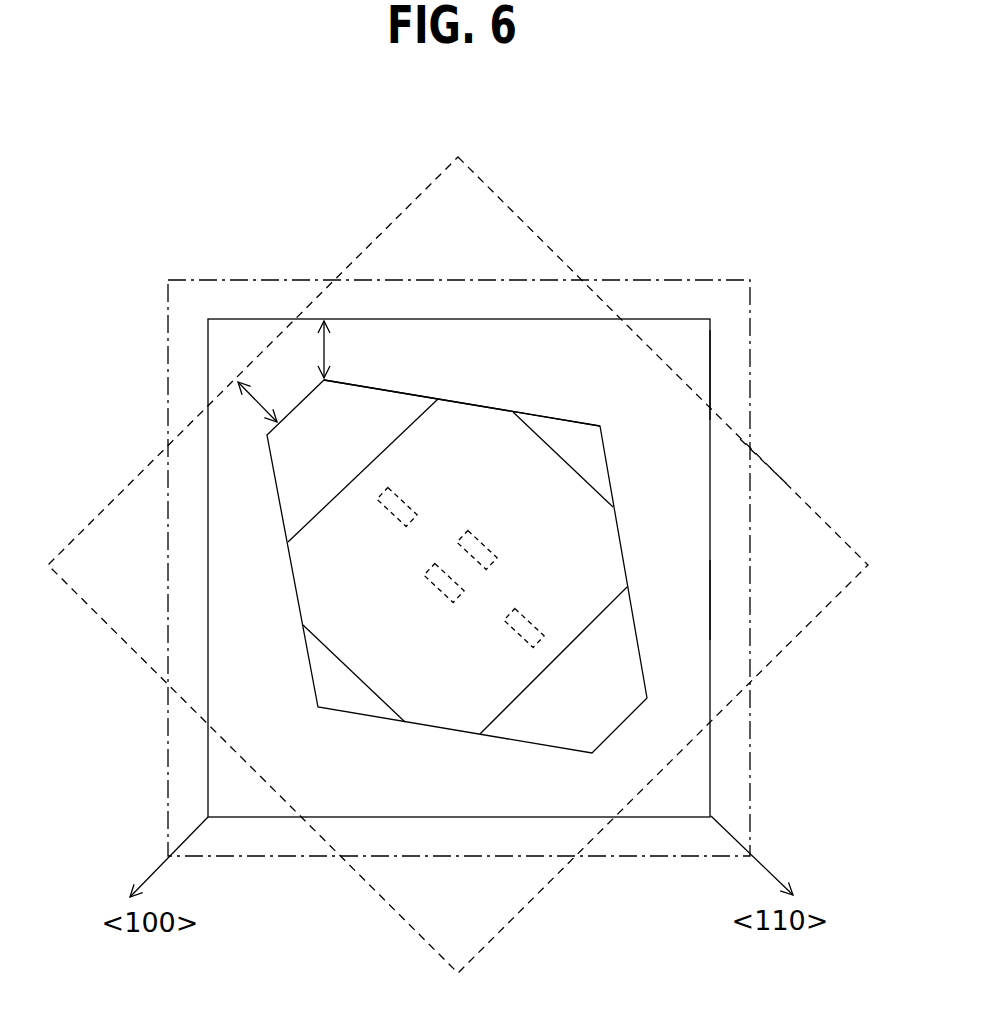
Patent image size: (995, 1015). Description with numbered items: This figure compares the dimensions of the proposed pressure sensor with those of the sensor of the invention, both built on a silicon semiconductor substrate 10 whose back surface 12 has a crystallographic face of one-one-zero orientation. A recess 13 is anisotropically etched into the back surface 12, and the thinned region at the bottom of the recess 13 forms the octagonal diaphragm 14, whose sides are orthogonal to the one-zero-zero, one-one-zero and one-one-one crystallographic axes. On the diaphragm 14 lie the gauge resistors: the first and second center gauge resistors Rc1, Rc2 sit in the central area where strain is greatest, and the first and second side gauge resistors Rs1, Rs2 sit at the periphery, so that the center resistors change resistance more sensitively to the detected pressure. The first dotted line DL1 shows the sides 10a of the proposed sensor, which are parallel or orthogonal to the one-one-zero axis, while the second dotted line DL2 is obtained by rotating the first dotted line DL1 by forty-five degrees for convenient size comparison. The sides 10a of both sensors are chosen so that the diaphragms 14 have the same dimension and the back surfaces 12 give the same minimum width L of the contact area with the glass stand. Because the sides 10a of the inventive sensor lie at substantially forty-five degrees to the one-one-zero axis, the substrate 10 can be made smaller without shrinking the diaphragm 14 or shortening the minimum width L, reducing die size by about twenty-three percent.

The semiconductor substrate 10 is at (796, 493).
The sides 10a is at (762, 458).
The back surface 12 is at (662, 418).
The recess 13 is at (400, 393).
The diaphragm 14 is at (480, 406).
The first side gauge resistor Rs1 is at (520, 640).
The second side gauge resistor Rs2 is at (378, 506).
The first center gauge resistor Rc1 is at (442, 598).
The second center gauge resistor Rc2 is at (483, 540).
The first dotted line DL1 is at (564, 258).
The second dotted line DL2 is at (682, 278).
The minimum width L is at (329, 350).